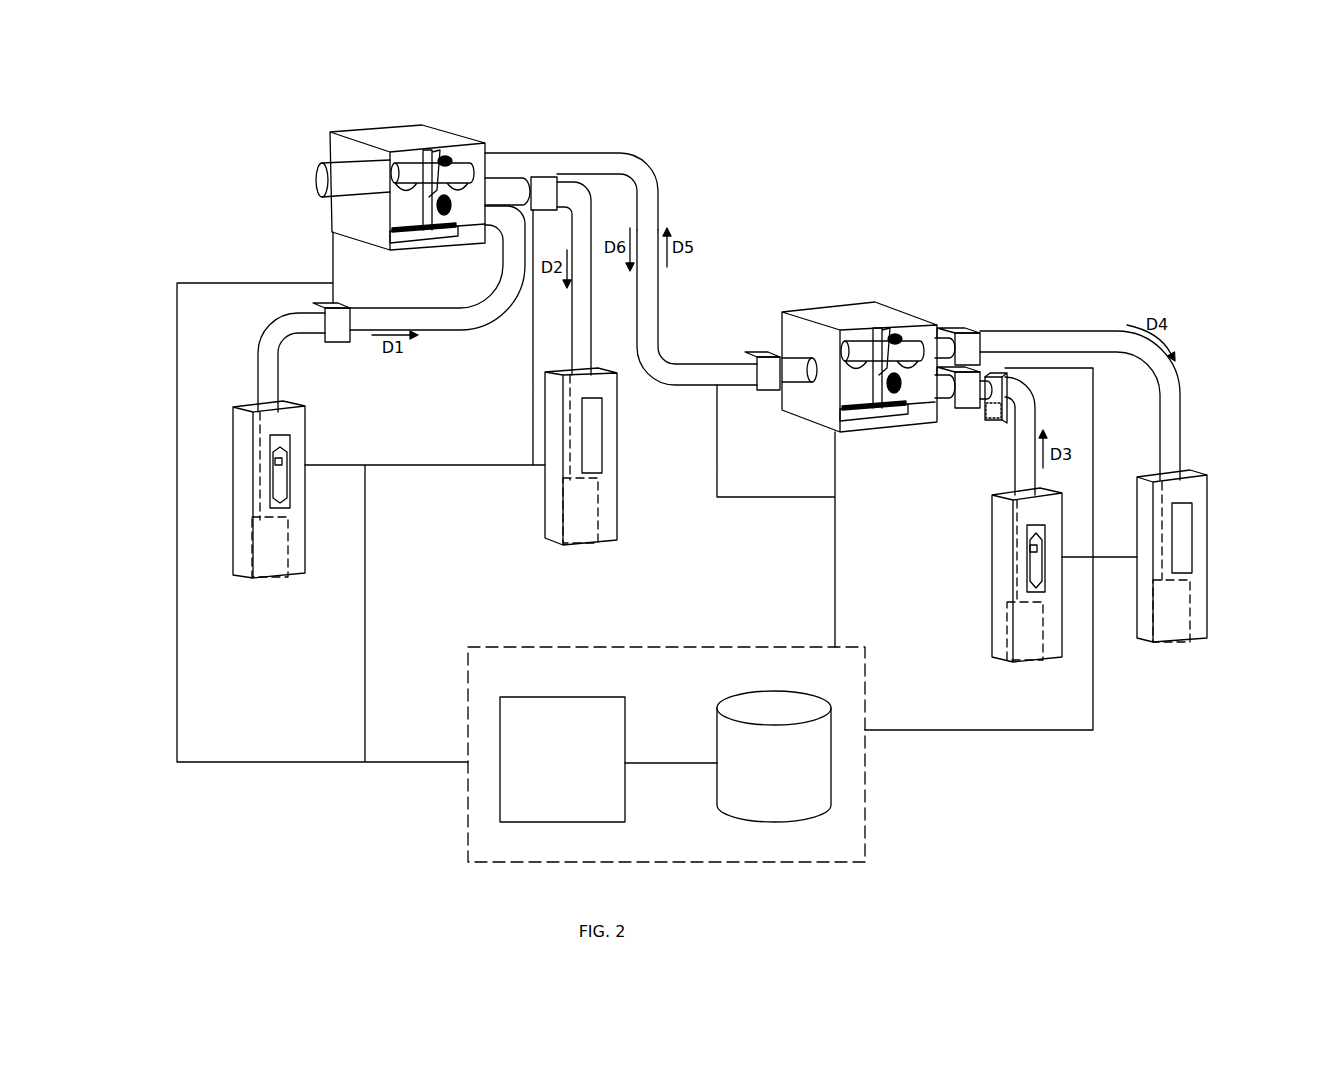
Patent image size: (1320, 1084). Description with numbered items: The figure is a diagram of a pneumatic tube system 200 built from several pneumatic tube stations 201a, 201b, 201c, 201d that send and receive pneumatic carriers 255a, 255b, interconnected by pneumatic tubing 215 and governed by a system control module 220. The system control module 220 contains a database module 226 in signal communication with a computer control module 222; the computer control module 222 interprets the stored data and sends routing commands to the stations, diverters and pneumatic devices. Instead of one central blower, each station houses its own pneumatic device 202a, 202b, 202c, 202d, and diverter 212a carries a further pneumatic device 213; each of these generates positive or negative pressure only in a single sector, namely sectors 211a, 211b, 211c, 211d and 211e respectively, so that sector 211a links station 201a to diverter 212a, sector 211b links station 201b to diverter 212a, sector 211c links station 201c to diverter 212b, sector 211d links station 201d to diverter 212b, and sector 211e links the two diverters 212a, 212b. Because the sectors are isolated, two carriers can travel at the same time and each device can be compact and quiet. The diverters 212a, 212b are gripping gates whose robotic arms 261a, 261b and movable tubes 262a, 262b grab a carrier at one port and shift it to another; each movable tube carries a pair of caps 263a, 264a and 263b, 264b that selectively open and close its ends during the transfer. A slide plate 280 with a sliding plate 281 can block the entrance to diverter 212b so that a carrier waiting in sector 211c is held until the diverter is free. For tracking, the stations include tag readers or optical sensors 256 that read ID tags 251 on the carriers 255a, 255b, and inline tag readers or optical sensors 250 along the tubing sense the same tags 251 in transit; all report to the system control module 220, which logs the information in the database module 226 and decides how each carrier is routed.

The pneumatic tube system 200 is at (946, 140).
The pneumatic tube station 201a is at (280, 583).
The pneumatic tube station 201b is at (587, 547).
The pneumatic tube station 201c is at (1037, 663).
The pneumatic tube station 201d is at (1176, 645).
The pneumatic device 202a is at (284, 542).
The pneumatic device 202b is at (594, 513).
The pneumatic device 202c is at (1012, 623).
The pneumatic device 202d is at (1189, 604).
The pneumatic tube sector 211a is at (455, 330).
The pneumatic tube sector 211b is at (588, 292).
The pneumatic tube sector 211c is at (1033, 420).
The pneumatic tube sector 211d is at (1070, 330).
The pneumatic tube sector 211e is at (655, 303).
The diverter 212a is at (393, 143).
The diverter 212b is at (858, 318).
The pneumatic device 213 is at (320, 178).
The pneumatic tubing 215 is at (655, 183).
The system control module 220 is at (468, 790).
The computer control module 222 is at (577, 765).
The database module 226 is at (789, 765).
The inline identifying tag reader or optical sensor 250 is at (543, 182).
The ID tag 251 is at (283, 462).
The pneumatic carrier 255a is at (286, 483).
The pneumatic carrier 255b is at (1030, 570).
The tag reader or optical sensor 256 is at (288, 438).
The robotic arm 261a is at (425, 150).
The robotic arm 261b is at (880, 330).
The movable tube 262a is at (452, 168).
The movable tube 262b is at (902, 352).
The cap 263a is at (391, 246).
The cap 263b is at (823, 412).
The cap 264a is at (462, 246).
The cap 264b is at (900, 413).
The slide plate 280 is at (995, 373).
The plate 281 is at (993, 427).